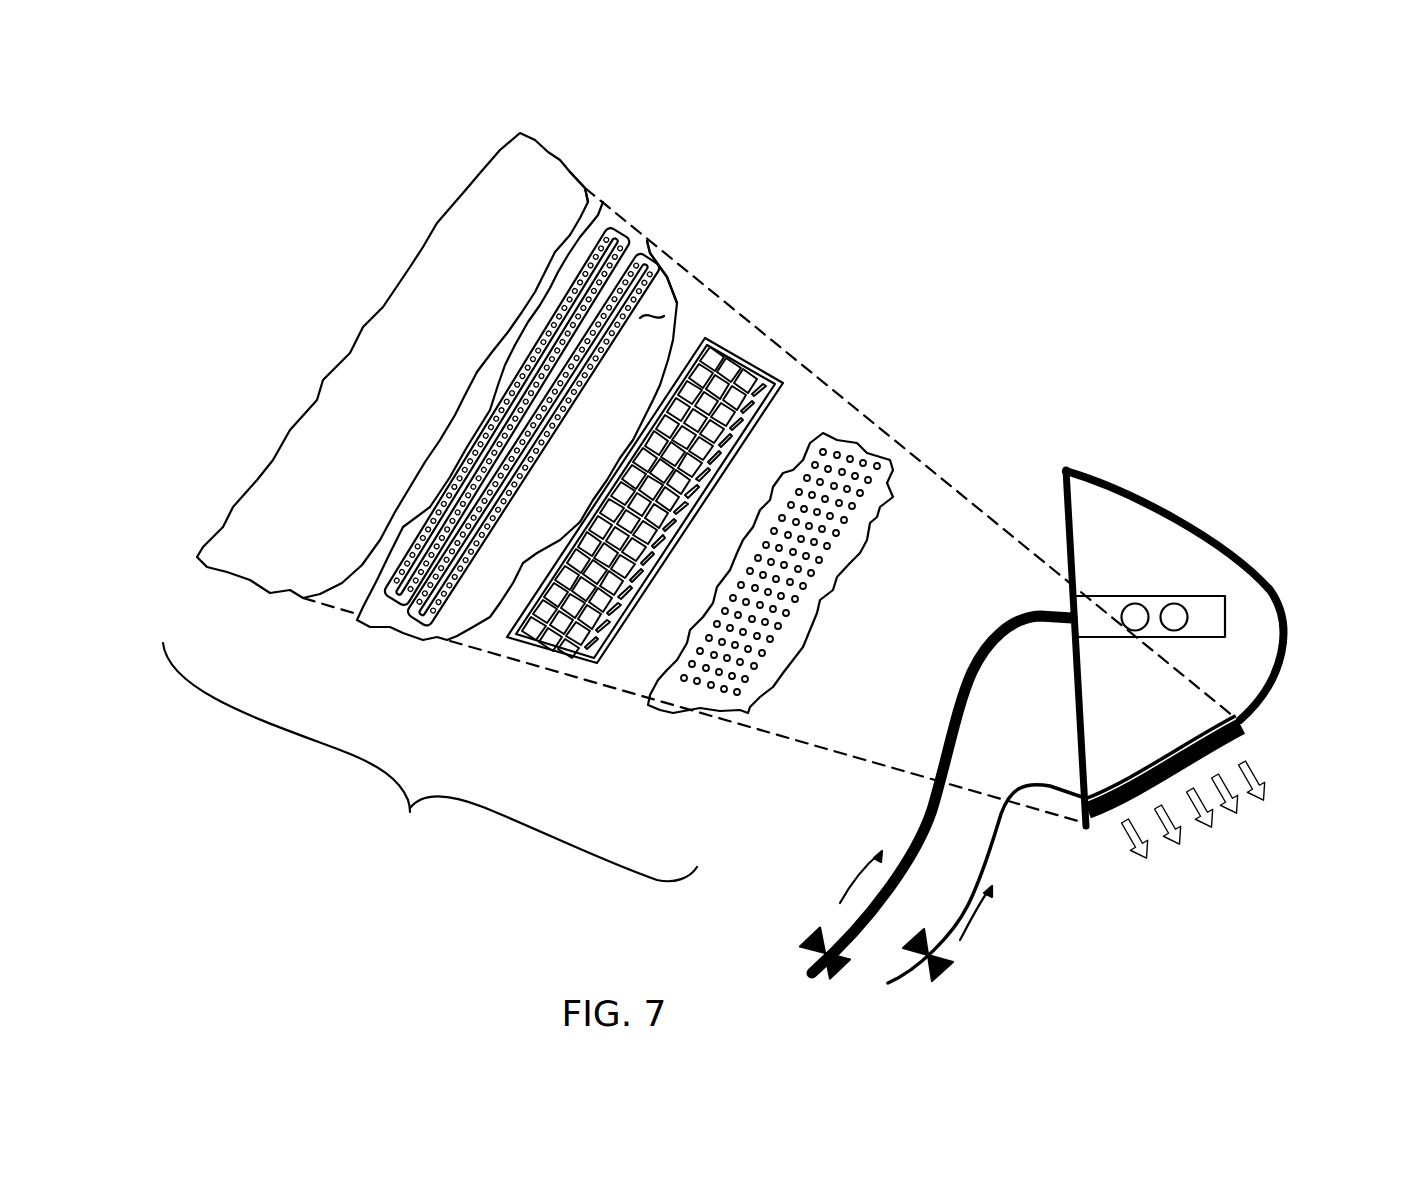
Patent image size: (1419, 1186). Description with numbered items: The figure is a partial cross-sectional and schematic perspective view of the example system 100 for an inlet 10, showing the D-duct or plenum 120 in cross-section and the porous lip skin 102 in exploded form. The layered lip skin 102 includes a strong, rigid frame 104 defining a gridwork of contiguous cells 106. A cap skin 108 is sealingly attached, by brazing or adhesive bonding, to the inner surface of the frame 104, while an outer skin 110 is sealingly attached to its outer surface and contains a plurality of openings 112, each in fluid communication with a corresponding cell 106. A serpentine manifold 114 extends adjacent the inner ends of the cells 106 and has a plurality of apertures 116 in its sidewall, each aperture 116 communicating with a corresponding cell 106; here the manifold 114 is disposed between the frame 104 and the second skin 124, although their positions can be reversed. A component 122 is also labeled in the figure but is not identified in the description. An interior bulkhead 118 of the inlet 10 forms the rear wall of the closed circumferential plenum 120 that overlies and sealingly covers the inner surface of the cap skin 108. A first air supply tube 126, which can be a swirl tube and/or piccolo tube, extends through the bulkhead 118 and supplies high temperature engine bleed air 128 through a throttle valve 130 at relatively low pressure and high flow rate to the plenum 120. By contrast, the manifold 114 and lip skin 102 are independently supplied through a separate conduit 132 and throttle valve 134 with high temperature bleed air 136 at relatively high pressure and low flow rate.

The system 100 is at (992, 316).
The inlet 10 is at (1185, 518).
The lip skin 102 is at (1143, 727).
The frame 104 is at (587, 664).
The cells 106 is at (562, 633).
The cap skin 108 is at (275, 590).
The outer skin 110 is at (747, 713).
The openings 112 is at (720, 698).
The serpentine manifold 114 is at (425, 642).
The apertures 116 is at (647, 313).
The interior bulkhead 118 is at (1075, 703).
The plenum 120 is at (1257, 657).
The layer edge 122 is at (650, 242).
The second skin 124 is at (580, 177).
The first air supply tube 126 is at (1111, 597).
The engine bleed air 128 is at (862, 885).
The throttle valve 130 is at (817, 952).
The conduit 132 is at (993, 855).
The throttle valve 134 is at (927, 965).
The bleed air 136 is at (975, 932).